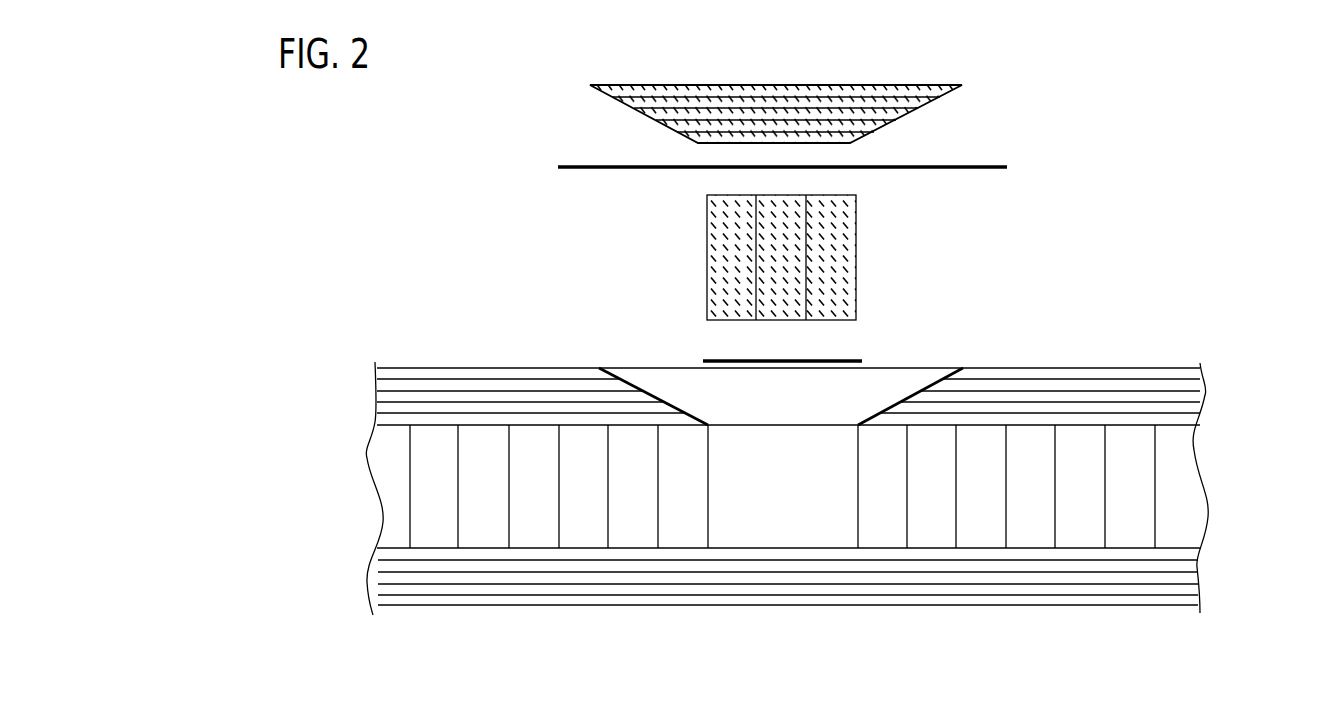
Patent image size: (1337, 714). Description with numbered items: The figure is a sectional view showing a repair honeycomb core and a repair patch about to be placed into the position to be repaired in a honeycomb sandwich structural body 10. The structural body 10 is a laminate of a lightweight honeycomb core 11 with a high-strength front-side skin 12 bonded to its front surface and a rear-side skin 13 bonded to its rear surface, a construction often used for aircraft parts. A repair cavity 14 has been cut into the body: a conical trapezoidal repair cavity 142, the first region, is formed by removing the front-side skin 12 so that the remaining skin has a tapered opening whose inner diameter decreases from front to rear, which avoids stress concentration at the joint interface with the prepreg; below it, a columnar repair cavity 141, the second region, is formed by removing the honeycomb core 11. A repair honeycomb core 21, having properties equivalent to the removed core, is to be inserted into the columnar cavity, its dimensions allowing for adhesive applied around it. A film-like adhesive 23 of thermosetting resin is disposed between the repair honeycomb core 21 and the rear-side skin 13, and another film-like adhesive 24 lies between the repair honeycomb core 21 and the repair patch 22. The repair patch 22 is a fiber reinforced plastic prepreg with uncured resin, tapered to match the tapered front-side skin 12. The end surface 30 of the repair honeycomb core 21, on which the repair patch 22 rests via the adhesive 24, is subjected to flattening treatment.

The honeycomb sandwich structural body 10 is at (1278, 415).
The honeycomb core 11 is at (1197, 470).
The front-side skin 12 is at (1205, 395).
The rear-side skin 13 is at (1197, 565).
The repair cavity 14 is at (803, 495).
The columnar repair cavity 141 is at (710, 488).
The conical trapezoidal repair cavity 142 is at (636, 388).
The repair honeycomb core 21 is at (856, 250).
The repair patch 22 is at (930, 99).
The film-like adhesive 23 is at (850, 360).
The film-like adhesive 24 is at (987, 170).
The end surface 30 is at (830, 195).